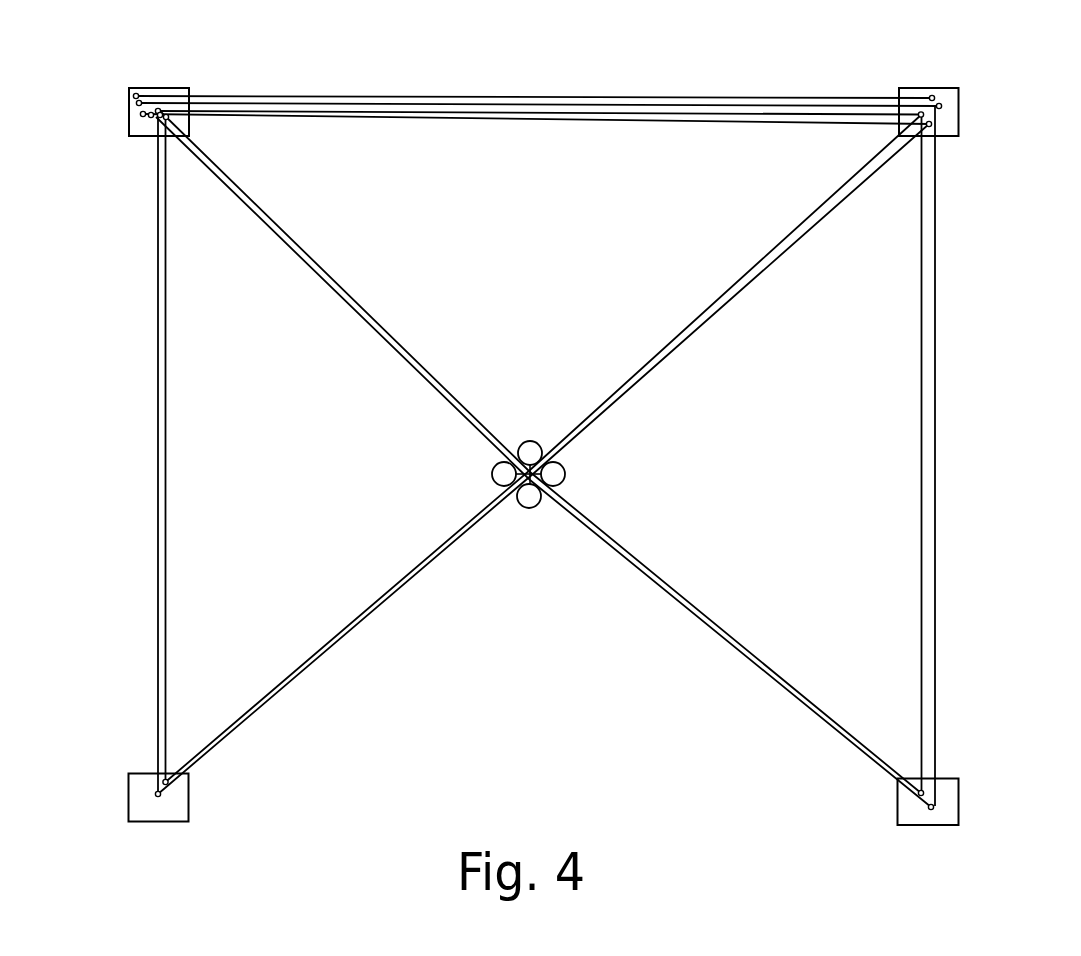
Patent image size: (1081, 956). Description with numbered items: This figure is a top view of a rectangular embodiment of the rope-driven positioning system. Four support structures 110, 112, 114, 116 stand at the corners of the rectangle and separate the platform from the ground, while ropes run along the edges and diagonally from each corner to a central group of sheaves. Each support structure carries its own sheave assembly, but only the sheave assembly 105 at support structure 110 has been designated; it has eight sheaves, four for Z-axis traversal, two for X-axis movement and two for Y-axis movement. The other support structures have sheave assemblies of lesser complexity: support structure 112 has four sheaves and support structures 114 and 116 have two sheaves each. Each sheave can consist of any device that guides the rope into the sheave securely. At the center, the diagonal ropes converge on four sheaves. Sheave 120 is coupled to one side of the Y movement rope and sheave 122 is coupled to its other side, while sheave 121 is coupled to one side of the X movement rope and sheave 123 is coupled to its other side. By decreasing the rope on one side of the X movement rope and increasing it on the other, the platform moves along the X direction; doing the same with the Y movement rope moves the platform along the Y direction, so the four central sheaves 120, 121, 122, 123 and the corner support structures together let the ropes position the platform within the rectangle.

The sheave assembly 105 is at (186, 75).
The support structure 110 is at (126, 122).
The support structure 112 is at (960, 121).
The support structure 114 is at (965, 795).
The support structure 116 is at (125, 790).
The sheave 120 is at (532, 437).
The sheave 121 is at (571, 476).
The sheave 122 is at (525, 512).
The sheave 123 is at (490, 476).